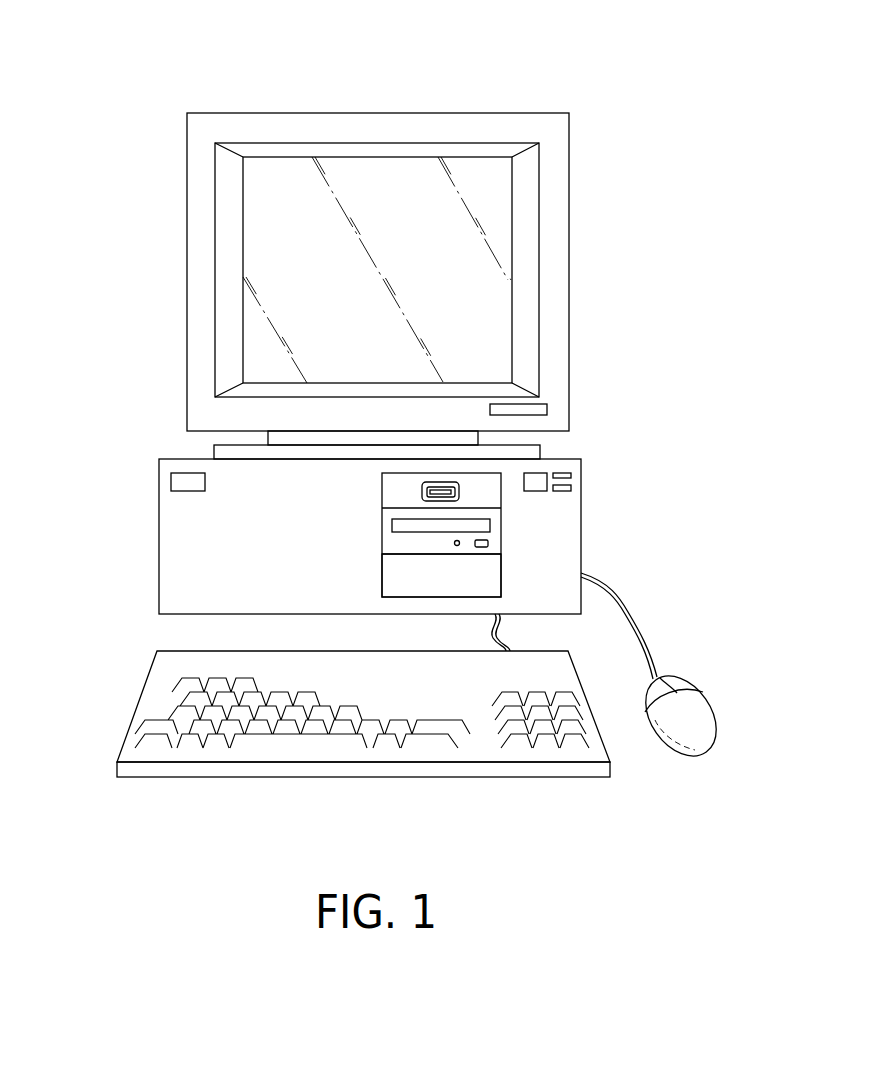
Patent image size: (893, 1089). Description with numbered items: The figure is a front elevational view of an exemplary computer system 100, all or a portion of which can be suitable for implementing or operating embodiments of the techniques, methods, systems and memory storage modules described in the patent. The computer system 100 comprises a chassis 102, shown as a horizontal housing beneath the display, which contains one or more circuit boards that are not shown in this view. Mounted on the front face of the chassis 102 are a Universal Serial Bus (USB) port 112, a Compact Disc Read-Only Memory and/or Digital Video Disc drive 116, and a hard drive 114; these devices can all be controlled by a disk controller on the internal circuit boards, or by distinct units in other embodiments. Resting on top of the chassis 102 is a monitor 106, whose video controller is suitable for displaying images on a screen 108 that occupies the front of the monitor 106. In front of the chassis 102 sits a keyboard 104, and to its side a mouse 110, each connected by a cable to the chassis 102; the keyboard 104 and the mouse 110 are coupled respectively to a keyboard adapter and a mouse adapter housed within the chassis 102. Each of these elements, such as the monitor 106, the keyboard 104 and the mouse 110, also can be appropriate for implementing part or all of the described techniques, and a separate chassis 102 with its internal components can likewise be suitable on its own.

The computer system 100 is at (560, 88).
The chassis 102 is at (159, 540).
The keyboard 104 is at (140, 700).
The monitor 106 is at (263, 113).
The screen 108 is at (290, 276).
The mouse 110 is at (700, 705).
The Universal Serial Bus (USB) port 112 is at (459, 489).
The hard drive 114 is at (490, 574).
The CD-ROM and/or DVD drive 116 is at (490, 533).